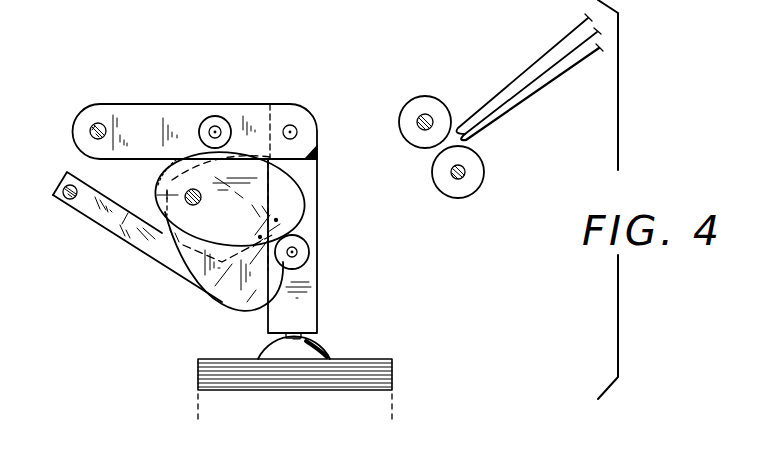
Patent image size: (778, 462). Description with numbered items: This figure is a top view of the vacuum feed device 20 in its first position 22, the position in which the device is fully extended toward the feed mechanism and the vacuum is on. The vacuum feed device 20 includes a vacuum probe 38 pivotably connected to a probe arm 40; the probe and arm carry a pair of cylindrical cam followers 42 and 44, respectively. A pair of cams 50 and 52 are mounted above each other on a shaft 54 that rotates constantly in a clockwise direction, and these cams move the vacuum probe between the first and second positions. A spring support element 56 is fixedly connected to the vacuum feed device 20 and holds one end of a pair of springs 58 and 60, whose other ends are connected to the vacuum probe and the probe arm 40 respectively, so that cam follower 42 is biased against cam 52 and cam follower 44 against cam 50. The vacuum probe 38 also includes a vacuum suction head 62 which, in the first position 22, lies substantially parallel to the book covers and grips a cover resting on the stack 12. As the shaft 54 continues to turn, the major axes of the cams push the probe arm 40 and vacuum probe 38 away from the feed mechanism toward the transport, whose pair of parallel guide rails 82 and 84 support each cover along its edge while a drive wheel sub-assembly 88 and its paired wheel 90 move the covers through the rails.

The sheet stack 12 is at (215, 358).
The vacuum feed device 20 is at (326, 136).
The first position 22 is at (402, 333).
The vacuum probe 38 is at (318, 183).
The probe arm 40 is at (175, 104).
The cam follower 42 is at (309, 247).
The cam follower 44 is at (220, 113).
The cam 50 is at (160, 196).
The cam 52 is at (250, 302).
The shaft 54 is at (199, 206).
The spring support element 56 is at (85, 180).
The spring 58 is at (270, 198).
The spring 60 is at (128, 241).
The vacuum suction head 62 is at (322, 350).
The guide rail 82 is at (546, 85).
The guide rail 84 is at (533, 60).
The drive wheel sub-assembly 88 is at (424, 97).
The lower feed roller 90 is at (468, 198).